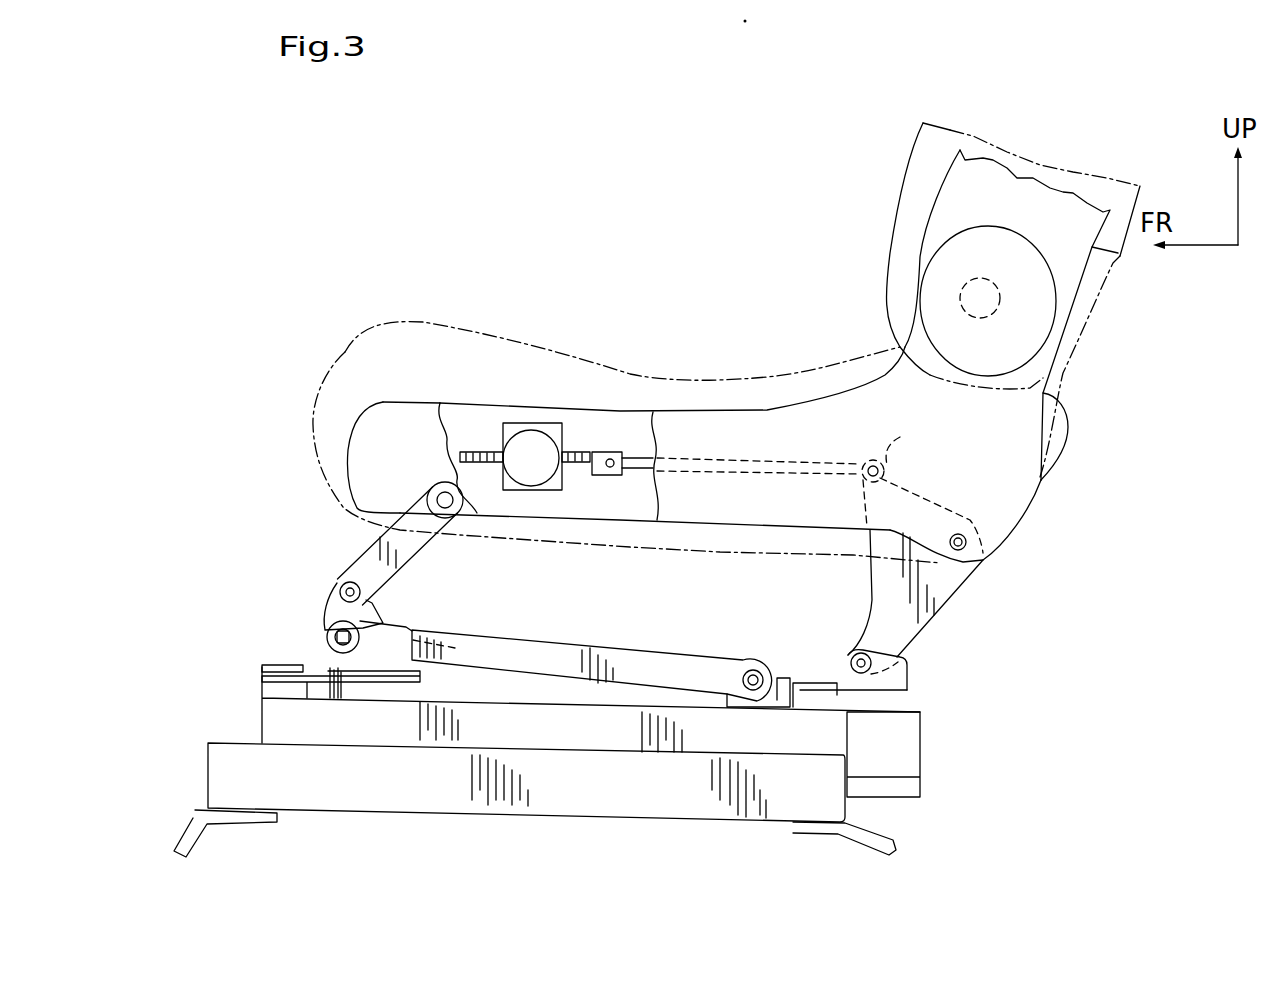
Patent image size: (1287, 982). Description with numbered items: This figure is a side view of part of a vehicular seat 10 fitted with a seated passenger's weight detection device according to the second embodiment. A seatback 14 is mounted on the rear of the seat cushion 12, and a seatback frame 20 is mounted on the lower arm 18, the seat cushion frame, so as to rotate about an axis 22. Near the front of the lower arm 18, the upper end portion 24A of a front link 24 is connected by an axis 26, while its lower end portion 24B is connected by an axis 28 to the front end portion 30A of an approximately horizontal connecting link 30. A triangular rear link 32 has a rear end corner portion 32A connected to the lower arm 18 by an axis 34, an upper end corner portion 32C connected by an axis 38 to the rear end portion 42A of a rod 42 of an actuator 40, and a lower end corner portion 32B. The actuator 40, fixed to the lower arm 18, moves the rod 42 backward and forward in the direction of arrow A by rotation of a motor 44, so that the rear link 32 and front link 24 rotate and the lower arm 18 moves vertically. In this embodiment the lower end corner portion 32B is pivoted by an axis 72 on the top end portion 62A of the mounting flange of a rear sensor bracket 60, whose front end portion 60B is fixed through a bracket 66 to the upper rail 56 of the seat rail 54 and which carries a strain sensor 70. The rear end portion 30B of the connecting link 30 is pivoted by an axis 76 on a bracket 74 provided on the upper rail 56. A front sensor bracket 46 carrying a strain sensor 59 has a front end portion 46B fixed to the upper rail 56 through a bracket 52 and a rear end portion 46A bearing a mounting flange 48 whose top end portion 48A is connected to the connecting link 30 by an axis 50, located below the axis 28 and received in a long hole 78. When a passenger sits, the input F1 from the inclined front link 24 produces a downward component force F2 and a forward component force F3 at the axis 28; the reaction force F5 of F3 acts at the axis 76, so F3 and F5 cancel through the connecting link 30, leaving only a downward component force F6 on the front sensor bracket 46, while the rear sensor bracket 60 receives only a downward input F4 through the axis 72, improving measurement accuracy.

The vehicular seat 10 is at (773, 298).
The seat cushion 12 is at (647, 370).
The seatback 14 is at (873, 282).
The lower arm 18 is at (762, 402).
The seatback frame 20 is at (1123, 258).
The axis 22 is at (1000, 305).
The front link 24 is at (397, 499).
The upper end portion of front link 24A is at (431, 478).
The lower end portion of front link 24B is at (347, 585).
The axis 26 is at (460, 517).
The axis 28 is at (353, 582).
The connecting link 30 is at (628, 639).
The front end portion of connecting link 30A is at (378, 607).
The rear end portion of connecting link 30B is at (755, 668).
The rear link 32 is at (973, 597).
The rear end corner portion of rear link 32A is at (985, 561).
The lower end corner portion of rear link 32B is at (850, 652).
The upper end corner portion of rear link 32C is at (921, 437).
The axis 34 is at (960, 534).
The axis 38 is at (868, 458).
The actuator 40 is at (521, 412).
The rod 42 is at (738, 472).
The rear end portion of rod 42A is at (923, 515).
The motor 44 is at (553, 467).
The front sensor bracket 46 is at (403, 697).
The rear end portion of front sensor bracket 46A is at (423, 677).
The front end portion of front sensor bracket 46B is at (290, 683).
The mounting flange 48 is at (427, 646).
The top end portion of mounting flange 48A is at (320, 628).
The axis 50 is at (330, 625).
The bracket 52 is at (292, 698).
The seat rail 54 is at (681, 826).
The upper rail 56 is at (781, 808).
The strain sensor 59 is at (333, 698).
The rear sensor bracket 60 is at (922, 690).
The front end portion of rear sensor bracket 60B is at (812, 700).
The top end portion of mounting flange 62A is at (915, 657).
The bracket 66 is at (820, 705).
The strain sensor 70 is at (857, 692).
The axis 72 is at (863, 650).
The bracket 74 is at (720, 698).
The axis 76 is at (747, 657).
The hole 78 is at (400, 627).
The arrow A is at (690, 442).
The input F1 is at (292, 668).
The downward component force F2 is at (352, 645).
The forward component force F3 is at (330, 592).
The downward input F4 is at (862, 665).
The reaction force F5 is at (837, 680).
The downward component force F6 is at (342, 645).